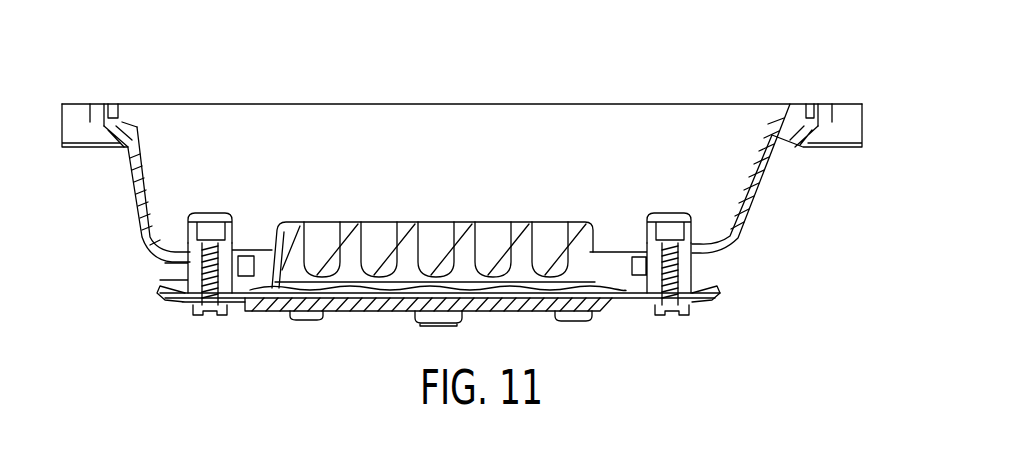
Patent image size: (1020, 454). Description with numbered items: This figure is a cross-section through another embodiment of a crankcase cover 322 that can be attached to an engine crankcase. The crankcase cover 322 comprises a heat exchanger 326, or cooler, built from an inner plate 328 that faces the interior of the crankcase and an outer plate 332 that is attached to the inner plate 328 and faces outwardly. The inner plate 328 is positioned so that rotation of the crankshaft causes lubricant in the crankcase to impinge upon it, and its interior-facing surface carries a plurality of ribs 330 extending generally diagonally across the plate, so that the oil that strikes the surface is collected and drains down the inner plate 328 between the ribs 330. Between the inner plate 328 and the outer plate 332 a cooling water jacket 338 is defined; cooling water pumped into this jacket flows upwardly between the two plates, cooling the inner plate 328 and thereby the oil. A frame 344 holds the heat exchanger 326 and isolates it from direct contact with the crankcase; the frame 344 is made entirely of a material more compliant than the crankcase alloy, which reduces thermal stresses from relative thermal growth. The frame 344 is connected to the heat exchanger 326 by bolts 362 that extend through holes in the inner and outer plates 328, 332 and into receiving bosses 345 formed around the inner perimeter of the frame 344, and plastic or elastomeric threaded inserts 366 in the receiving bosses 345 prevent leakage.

The crankcase cover 322 is at (745, 53).
The heat exchanger 326 is at (242, 310).
The inner plate 328 is at (558, 268).
The ribs 330 is at (400, 222).
The outer plate 332 is at (528, 313).
The cooling water jacket 338 is at (347, 295).
The frame 344 is at (740, 240).
The receiving bosses 345 is at (197, 213).
The bolts 362 is at (197, 313).
The threaded inserts 366 is at (197, 257).